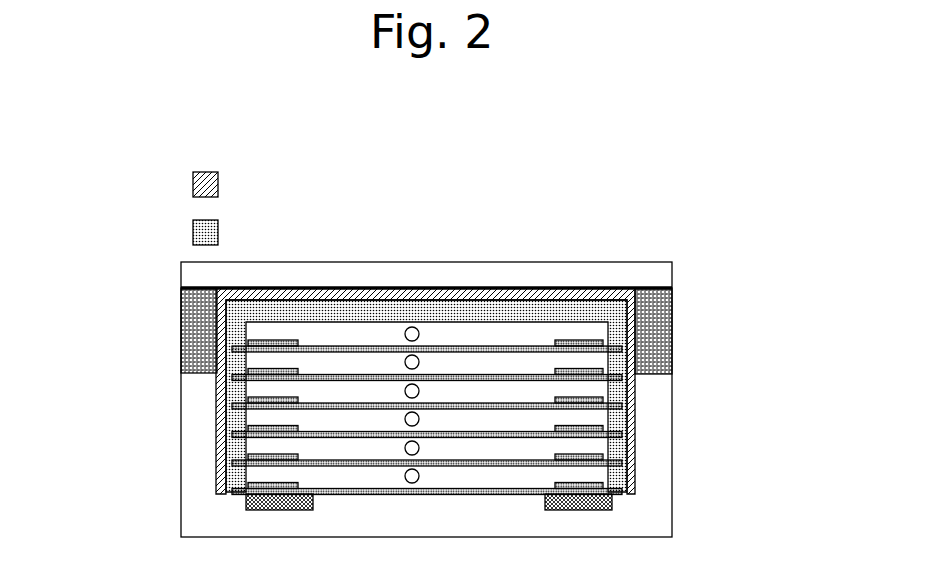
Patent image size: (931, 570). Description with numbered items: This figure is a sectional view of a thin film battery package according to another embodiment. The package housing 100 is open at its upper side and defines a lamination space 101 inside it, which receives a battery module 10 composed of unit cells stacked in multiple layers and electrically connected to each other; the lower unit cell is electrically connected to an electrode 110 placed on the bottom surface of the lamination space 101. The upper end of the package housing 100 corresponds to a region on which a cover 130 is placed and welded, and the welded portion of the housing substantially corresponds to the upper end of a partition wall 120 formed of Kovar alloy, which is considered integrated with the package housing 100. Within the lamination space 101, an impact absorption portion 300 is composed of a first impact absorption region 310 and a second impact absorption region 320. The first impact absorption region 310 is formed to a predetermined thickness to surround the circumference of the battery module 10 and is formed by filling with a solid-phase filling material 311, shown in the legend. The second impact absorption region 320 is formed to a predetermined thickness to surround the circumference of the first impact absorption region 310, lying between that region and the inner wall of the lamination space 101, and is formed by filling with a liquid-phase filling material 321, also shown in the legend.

The package housing 100 is at (660, 490).
The electrode 110 is at (612, 508).
The partition wall 120 is at (672, 328).
The cover 130 is at (650, 275).
The battery module 10 is at (513, 411).
The lamination space 101 is at (628, 428).
The impact absorption portion 300 is at (342, 389).
The first impact absorption region 310 is at (237, 339).
The second impact absorption region 320 is at (222, 294).
The solid-phase filling material 311 is at (218, 229).
The liquid-phase filling material 321 is at (218, 181).